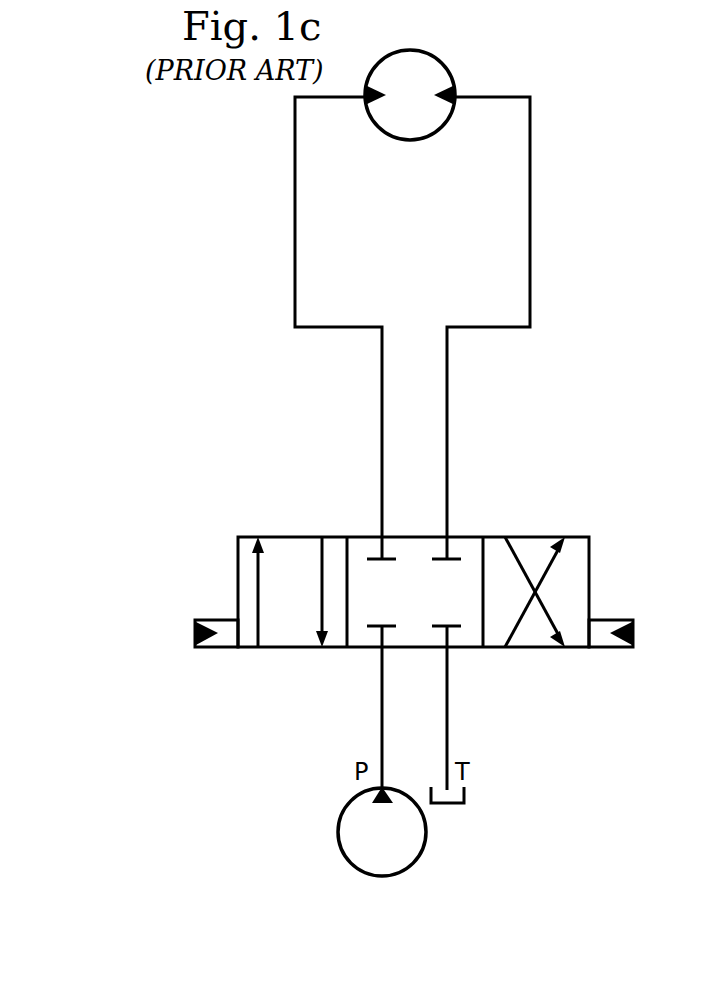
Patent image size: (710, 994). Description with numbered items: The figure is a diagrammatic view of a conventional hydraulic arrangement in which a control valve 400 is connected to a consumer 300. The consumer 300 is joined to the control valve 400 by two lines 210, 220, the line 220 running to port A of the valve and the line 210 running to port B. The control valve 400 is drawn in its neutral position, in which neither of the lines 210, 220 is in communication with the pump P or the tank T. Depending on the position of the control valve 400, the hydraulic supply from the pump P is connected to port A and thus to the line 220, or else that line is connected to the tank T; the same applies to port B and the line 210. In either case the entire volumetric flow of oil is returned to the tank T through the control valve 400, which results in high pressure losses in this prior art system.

The consumer 300 is at (452, 78).
The line 220 is at (381, 397).
The line 210 is at (448, 397).
The control valve 400 is at (492, 537).